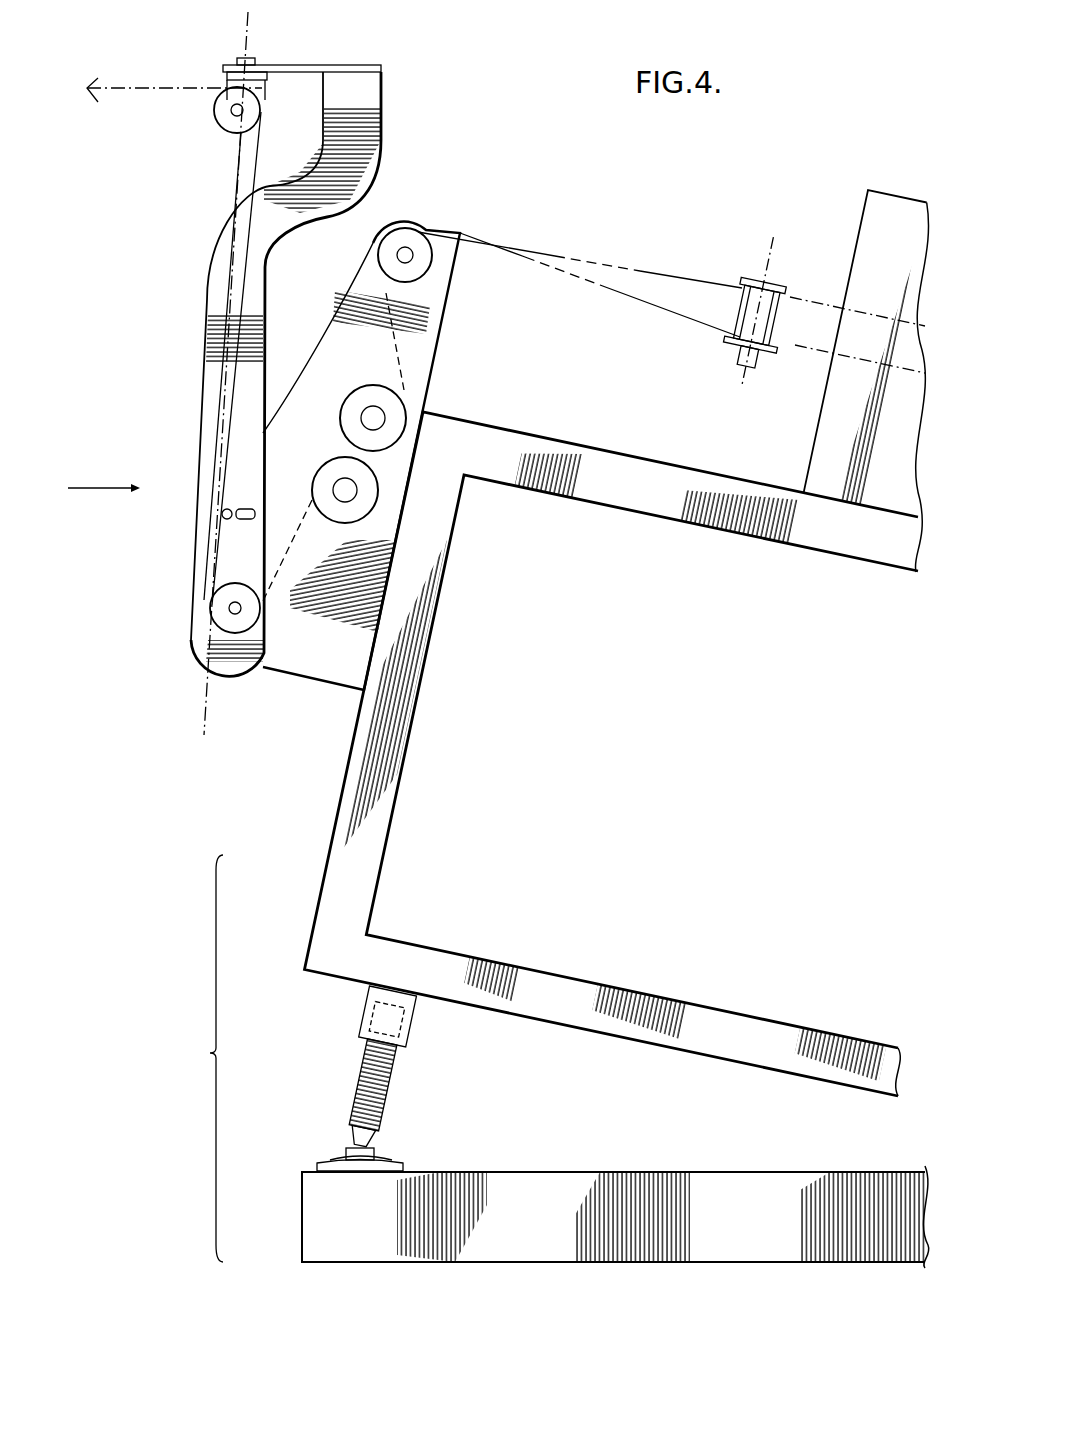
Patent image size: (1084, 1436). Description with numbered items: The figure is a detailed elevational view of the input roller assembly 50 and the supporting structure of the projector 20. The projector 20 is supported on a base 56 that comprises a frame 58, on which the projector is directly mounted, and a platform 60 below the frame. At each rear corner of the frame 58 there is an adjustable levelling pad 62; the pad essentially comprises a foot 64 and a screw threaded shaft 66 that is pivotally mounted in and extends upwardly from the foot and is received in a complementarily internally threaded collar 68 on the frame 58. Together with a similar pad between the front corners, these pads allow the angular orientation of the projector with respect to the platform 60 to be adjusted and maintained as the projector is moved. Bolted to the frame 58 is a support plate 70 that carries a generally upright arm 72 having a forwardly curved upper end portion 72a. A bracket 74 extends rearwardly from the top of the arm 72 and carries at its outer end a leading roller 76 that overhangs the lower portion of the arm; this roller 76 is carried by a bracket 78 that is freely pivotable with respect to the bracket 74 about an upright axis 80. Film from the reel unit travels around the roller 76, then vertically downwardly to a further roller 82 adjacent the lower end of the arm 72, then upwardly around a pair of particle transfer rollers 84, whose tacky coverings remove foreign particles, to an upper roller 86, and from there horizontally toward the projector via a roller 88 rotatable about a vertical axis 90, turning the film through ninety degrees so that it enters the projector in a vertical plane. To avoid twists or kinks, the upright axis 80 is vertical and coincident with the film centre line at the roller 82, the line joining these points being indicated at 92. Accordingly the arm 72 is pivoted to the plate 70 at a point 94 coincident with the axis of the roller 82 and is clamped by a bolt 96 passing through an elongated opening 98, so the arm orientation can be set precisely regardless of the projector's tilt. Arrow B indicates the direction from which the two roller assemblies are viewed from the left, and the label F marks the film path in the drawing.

The projector 20 is at (840, 246).
The input roller assembly 50 is at (376, 49).
The base 56 is at (199, 1058).
The frame 58 is at (320, 817).
The platform 60 is at (584, 1195).
The adjustable levelling pad 62 is at (416, 1107).
The foot 64 is at (398, 1160).
The screw threaded shaft 66 is at (358, 1093).
The screw threaded collar 68 is at (418, 1034).
The support plate 70 is at (337, 650).
The arm 72 is at (207, 293).
The upper end portion 72a is at (368, 148).
The bracket 74 is at (314, 65).
The leading roller 76 is at (208, 130).
The bracket 78 is at (258, 93).
The upright axis 80 is at (236, 58).
The roller 82 is at (221, 620).
The particle transfer rollers 84 is at (333, 476).
The upper roller 86 is at (420, 232).
The roller 88 is at (742, 317).
The vertical axis 90 is at (748, 378).
The line 92 is at (237, 147).
The pivot point 94 is at (231, 608).
The bolt 96 is at (232, 503).
The elongated opening 98 is at (213, 530).
The arrow B is at (164, 285).
The force F is at (290, 537).